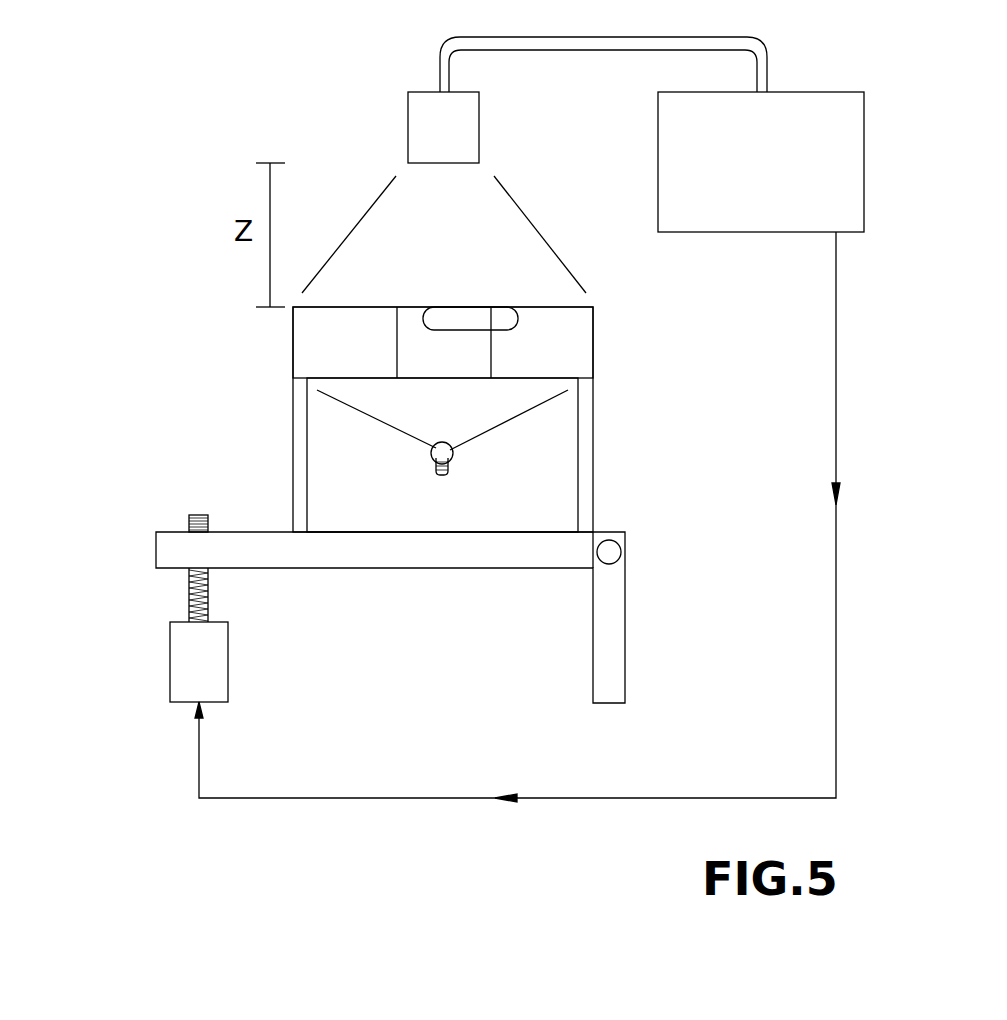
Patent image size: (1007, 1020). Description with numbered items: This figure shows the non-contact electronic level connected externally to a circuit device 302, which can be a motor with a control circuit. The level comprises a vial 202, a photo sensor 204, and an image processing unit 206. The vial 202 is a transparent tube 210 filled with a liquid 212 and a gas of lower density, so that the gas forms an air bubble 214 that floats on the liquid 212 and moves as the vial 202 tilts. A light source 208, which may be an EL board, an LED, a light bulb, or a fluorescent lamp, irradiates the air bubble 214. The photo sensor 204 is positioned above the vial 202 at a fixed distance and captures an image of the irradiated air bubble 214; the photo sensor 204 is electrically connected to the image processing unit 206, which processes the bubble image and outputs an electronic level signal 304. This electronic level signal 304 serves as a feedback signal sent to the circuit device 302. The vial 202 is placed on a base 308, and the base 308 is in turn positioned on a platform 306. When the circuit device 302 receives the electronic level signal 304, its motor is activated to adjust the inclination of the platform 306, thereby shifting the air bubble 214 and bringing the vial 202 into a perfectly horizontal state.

The vial 202 is at (545, 389).
The photo sensor 204 is at (427, 119).
The image processing unit 206 is at (817, 168).
The light source 208 is at (437, 450).
The transparent tube 210 is at (593, 340).
The liquid 212 is at (567, 367).
The air bubble 214 is at (477, 318).
The circuit device 302 is at (194, 660).
The electronic level signal 304 is at (836, 630).
The platform 306 is at (272, 550).
The base 308 is at (300, 430).